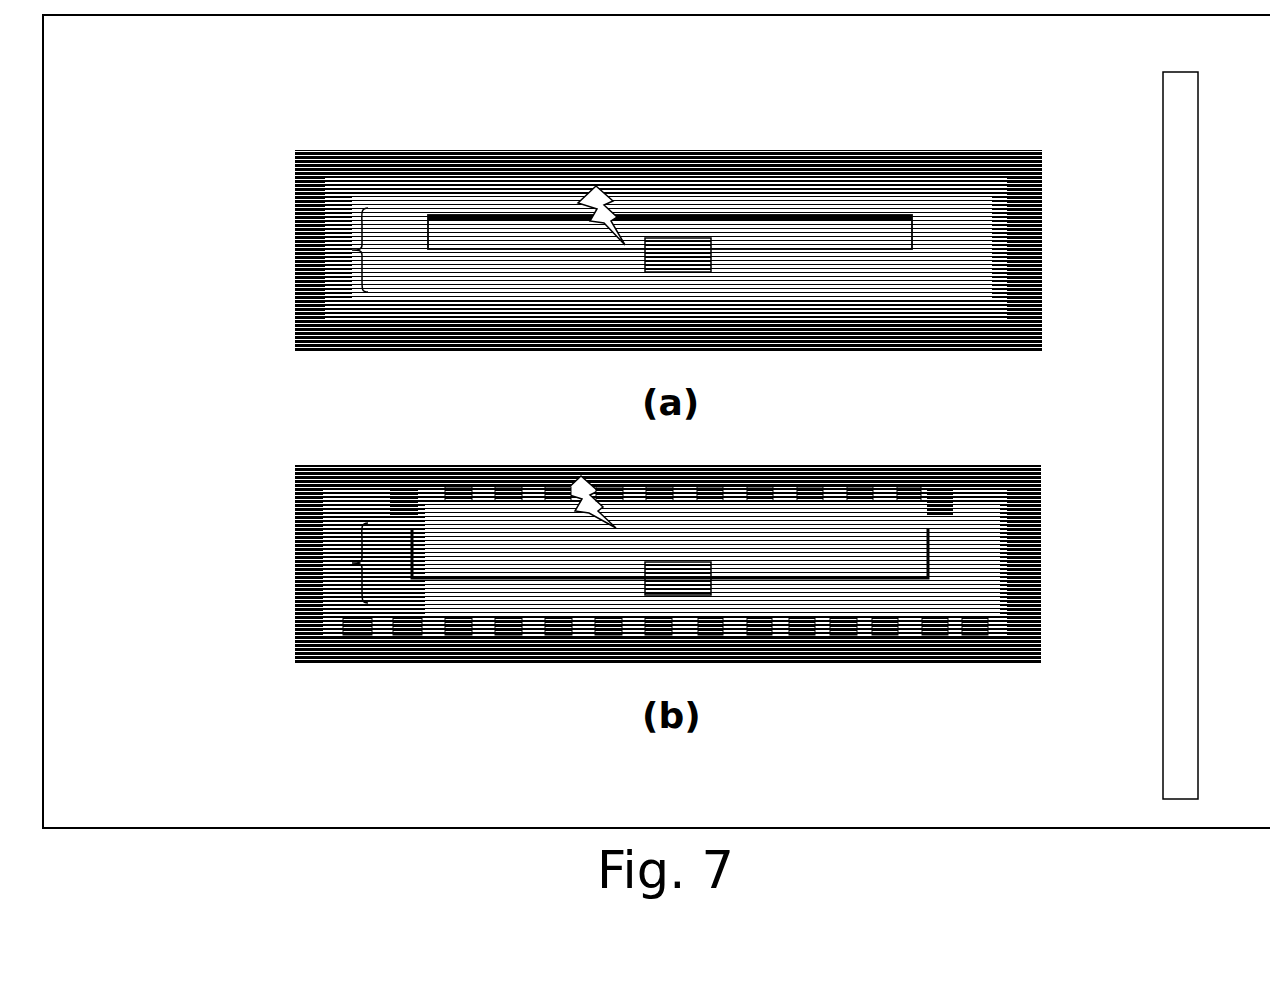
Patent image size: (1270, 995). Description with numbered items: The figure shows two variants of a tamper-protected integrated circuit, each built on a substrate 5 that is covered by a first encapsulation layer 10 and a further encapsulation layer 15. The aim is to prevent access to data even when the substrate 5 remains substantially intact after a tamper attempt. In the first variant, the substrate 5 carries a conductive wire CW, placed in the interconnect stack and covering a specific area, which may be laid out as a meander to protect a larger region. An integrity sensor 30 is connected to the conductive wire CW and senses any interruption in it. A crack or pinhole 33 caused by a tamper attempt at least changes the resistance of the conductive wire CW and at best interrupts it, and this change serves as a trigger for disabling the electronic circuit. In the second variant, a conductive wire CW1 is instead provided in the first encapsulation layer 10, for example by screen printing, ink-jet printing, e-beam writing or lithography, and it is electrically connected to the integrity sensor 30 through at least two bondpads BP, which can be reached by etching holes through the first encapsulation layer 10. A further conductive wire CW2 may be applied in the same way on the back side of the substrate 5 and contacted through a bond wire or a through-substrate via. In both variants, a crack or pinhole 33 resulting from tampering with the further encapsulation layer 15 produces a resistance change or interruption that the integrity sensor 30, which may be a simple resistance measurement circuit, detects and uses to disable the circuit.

The first encapsulation layer 10 is at (337, 187).
The substrate 5 is at (352, 250).
The further encapsulation layer 15 is at (988, 161).
The crack or pinhole 33 is at (596, 186).
The conductive wire CW is at (646, 214).
The integrity sensor 30 is at (678, 250).
The conductive wire CW1 is at (466, 487).
The further conductive wire CW2 is at (803, 636).
The bondpads BP is at (403, 526).